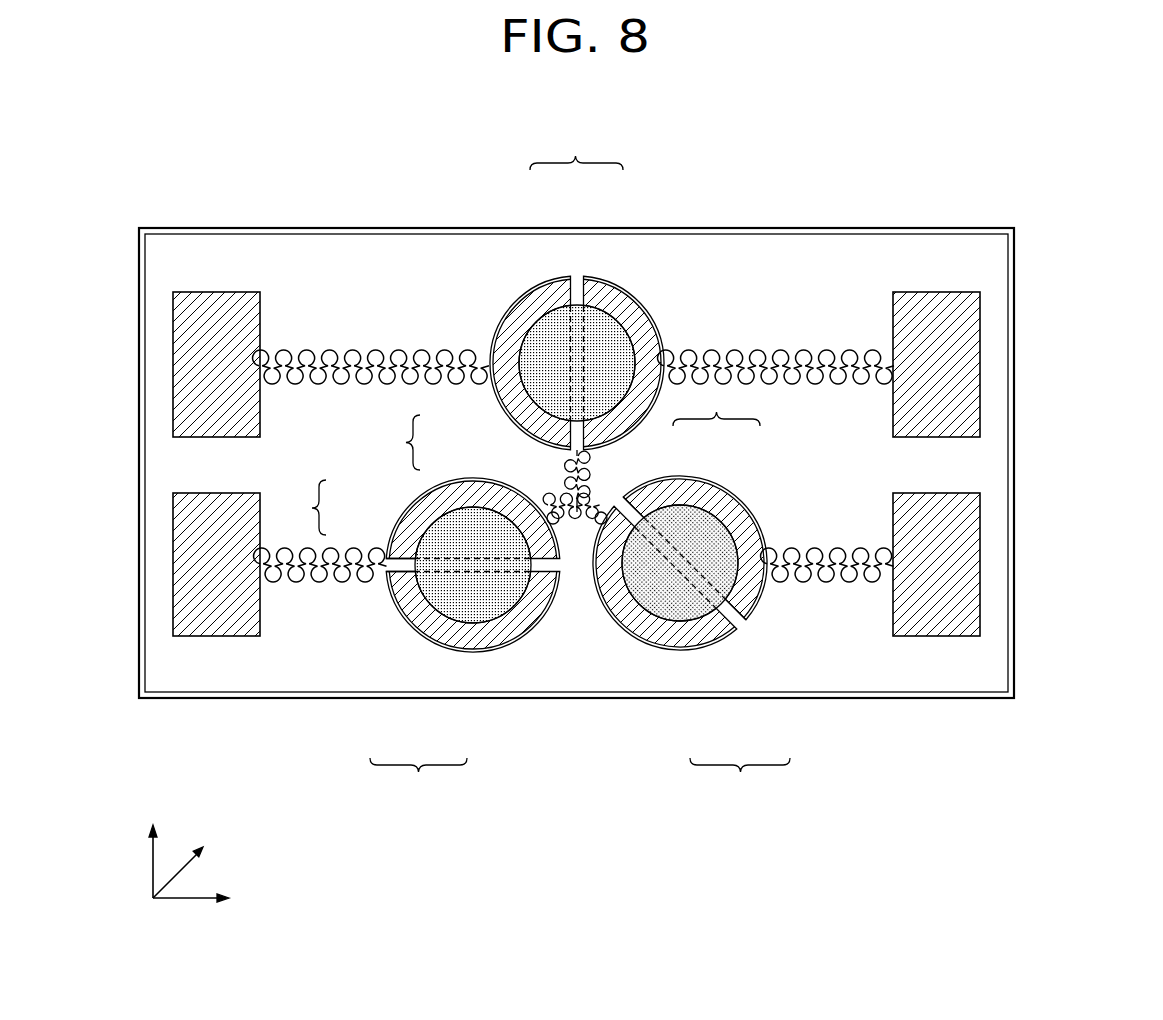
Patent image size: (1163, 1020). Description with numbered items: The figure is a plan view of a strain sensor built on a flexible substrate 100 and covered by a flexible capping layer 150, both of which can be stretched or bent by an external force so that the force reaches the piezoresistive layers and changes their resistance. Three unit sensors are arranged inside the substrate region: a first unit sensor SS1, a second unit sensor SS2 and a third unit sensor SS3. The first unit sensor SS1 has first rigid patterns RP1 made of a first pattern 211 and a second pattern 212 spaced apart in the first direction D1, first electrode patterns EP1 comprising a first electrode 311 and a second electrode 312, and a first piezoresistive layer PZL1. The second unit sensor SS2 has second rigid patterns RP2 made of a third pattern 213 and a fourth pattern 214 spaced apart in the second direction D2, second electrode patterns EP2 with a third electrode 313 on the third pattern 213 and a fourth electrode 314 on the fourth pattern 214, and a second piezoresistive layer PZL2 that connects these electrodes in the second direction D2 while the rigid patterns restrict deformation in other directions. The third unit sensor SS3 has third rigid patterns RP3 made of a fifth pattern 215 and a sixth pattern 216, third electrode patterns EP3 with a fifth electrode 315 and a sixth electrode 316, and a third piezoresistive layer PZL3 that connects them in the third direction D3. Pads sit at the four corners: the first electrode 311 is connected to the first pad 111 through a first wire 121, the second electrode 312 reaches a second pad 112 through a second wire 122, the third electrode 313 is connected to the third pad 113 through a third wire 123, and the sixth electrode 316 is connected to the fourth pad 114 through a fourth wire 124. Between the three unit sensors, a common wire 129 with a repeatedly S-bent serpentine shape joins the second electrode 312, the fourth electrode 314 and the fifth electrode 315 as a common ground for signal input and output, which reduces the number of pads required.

The flexible substrate 100 is at (1010, 265).
The flexible capping layer 150 is at (992, 300).
The first pad 111 is at (187, 356).
The second pad 112 is at (967, 358).
The third pad 113 is at (187, 551).
The fourth pad 114 is at (967, 558).
The first wire 121 is at (418, 350).
The second wire 122 is at (733, 352).
The third wire 123 is at (312, 580).
The fourth wire 124 is at (830, 582).
The common wire 129 is at (577, 514).
The first unit sensor SS1 is at (524, 327).
The second unit sensor SS2 is at (425, 639).
The third unit sensor SS3 is at (680, 593).
The first electrode patterns EP1 is at (577, 291).
The second electrode patterns EP2 is at (466, 639).
The third electrode patterns EP3 is at (680, 621).
The first electrode 311 is at (554, 292).
The second electrode 312 is at (600, 287).
The third electrode 313 is at (448, 637).
The fourth electrode 314 is at (400, 545).
The fifth electrode 315 is at (710, 637).
The sixth electrode 316 is at (757, 603).
The first piezoresistive layer PZL1 is at (530, 338).
The second piezoresistive layer PZL2 is at (481, 607).
The third piezoresistive layer PZL3 is at (665, 610).
The first rigid patterns RP1 is at (513, 401).
The second rigid patterns RP2 is at (414, 563).
The third rigid patterns RP3 is at (679, 532).
The first pattern 211 is at (563, 462).
The second pattern 212 is at (560, 480).
The third pattern 213 is at (383, 564).
The fourth pattern 214 is at (425, 497).
The fifth pattern 215 is at (730, 520).
The sixth pattern 216 is at (690, 477).
The first direction D1 is at (204, 899).
The second direction D2 is at (152, 849).
The third direction D3 is at (193, 867).